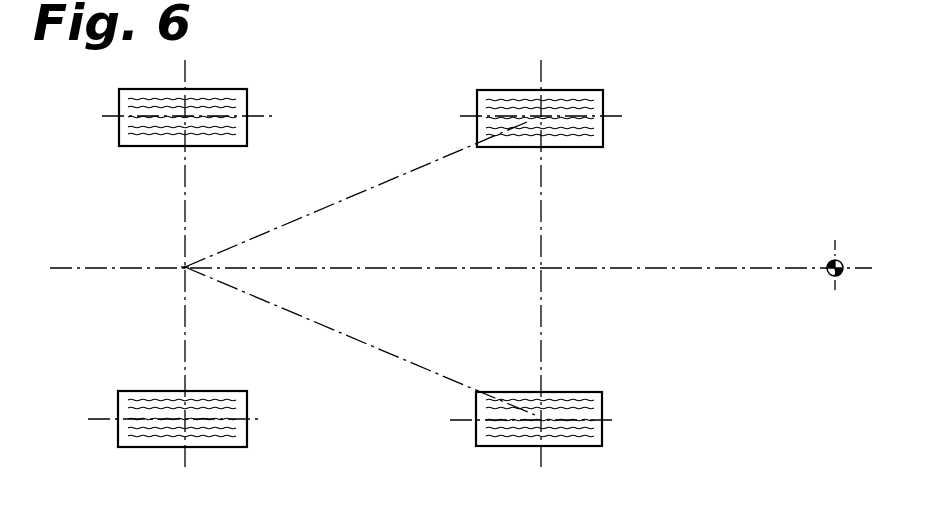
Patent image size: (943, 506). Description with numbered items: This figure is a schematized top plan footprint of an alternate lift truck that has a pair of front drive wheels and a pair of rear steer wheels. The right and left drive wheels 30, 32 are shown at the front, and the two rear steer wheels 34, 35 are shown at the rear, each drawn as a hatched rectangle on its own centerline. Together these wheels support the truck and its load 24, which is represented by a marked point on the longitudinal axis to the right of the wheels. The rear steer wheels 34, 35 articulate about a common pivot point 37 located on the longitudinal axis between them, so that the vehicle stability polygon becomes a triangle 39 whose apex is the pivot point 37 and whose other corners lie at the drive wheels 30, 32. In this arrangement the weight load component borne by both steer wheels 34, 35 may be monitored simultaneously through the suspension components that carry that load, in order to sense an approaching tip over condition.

The load 24 is at (828, 262).
The right drive wheel 30 is at (596, 432).
The left drive wheel 32 is at (600, 103).
The rear steer wheel 34 is at (243, 102).
The rear steer wheel 35 is at (238, 432).
The common pivot point 37 is at (183, 265).
The triangle 39 is at (308, 213).